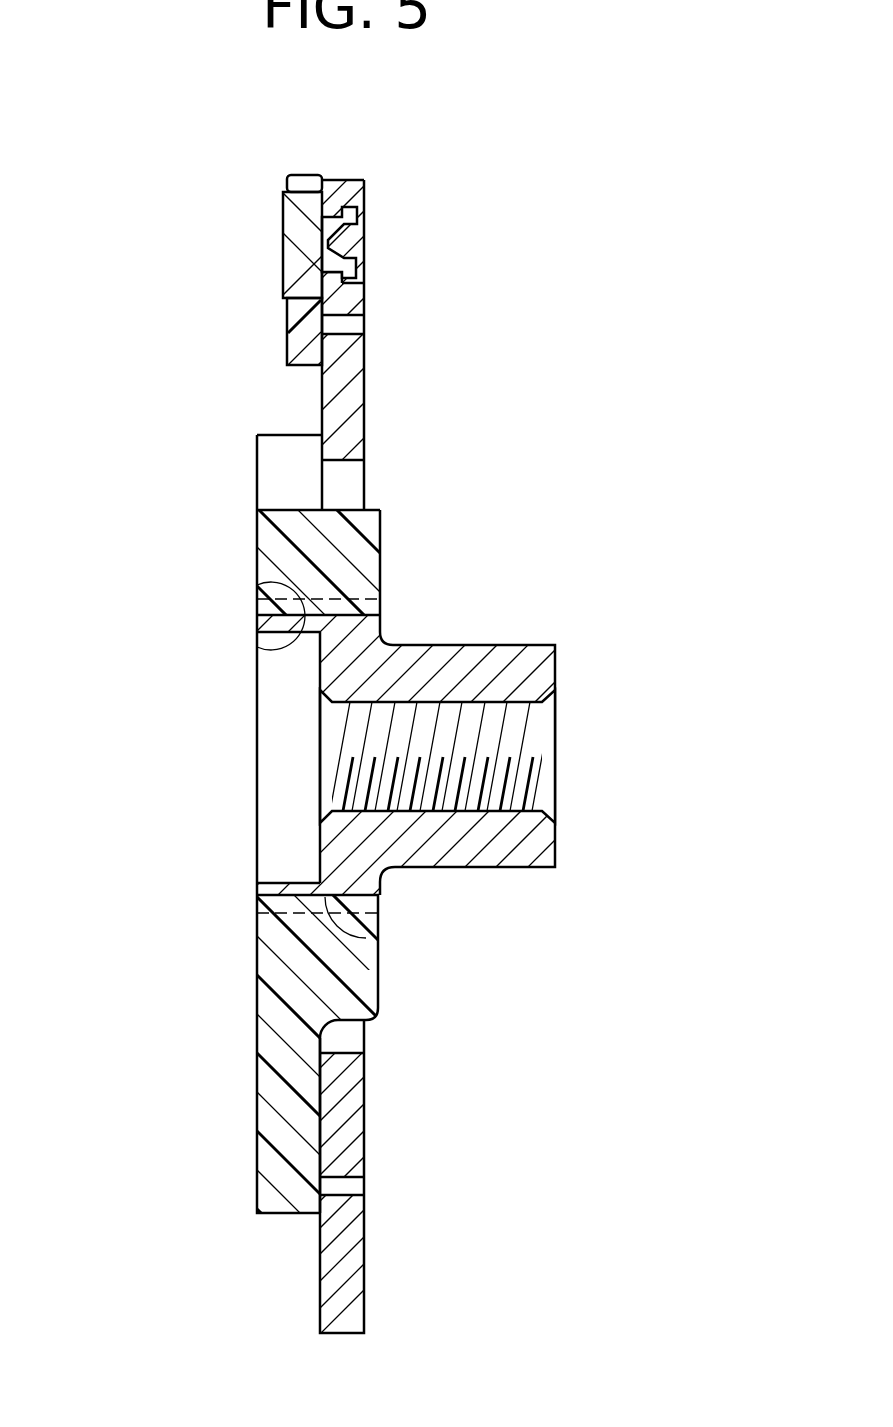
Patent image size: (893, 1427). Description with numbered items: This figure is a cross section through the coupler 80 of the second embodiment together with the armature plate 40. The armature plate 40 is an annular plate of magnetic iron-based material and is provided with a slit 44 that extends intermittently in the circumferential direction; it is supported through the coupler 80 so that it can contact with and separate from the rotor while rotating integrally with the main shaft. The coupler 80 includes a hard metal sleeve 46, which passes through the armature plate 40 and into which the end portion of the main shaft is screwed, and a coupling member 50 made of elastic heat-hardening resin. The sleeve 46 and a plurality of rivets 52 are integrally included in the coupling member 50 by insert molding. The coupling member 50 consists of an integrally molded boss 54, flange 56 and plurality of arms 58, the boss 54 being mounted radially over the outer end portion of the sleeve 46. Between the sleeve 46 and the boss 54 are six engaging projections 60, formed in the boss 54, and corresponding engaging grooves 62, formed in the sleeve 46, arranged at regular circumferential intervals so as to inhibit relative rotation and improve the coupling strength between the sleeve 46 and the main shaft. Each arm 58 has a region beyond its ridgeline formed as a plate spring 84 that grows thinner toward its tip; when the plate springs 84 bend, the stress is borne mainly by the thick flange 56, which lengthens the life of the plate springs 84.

The armature plate 40 is at (353, 188).
The slit 44 is at (350, 329).
The sleeve 46 is at (508, 657).
The coupling member 50 is at (225, 973).
The rivet 52 is at (290, 230).
The boss 54 is at (258, 922).
The flange 56 is at (250, 1043).
The arm 58 is at (270, 1160).
The engaging projection 60 is at (258, 646).
The engaging groove 62 is at (258, 584).
The coupler 80 is at (170, 773).
The plate spring 84 is at (293, 338).